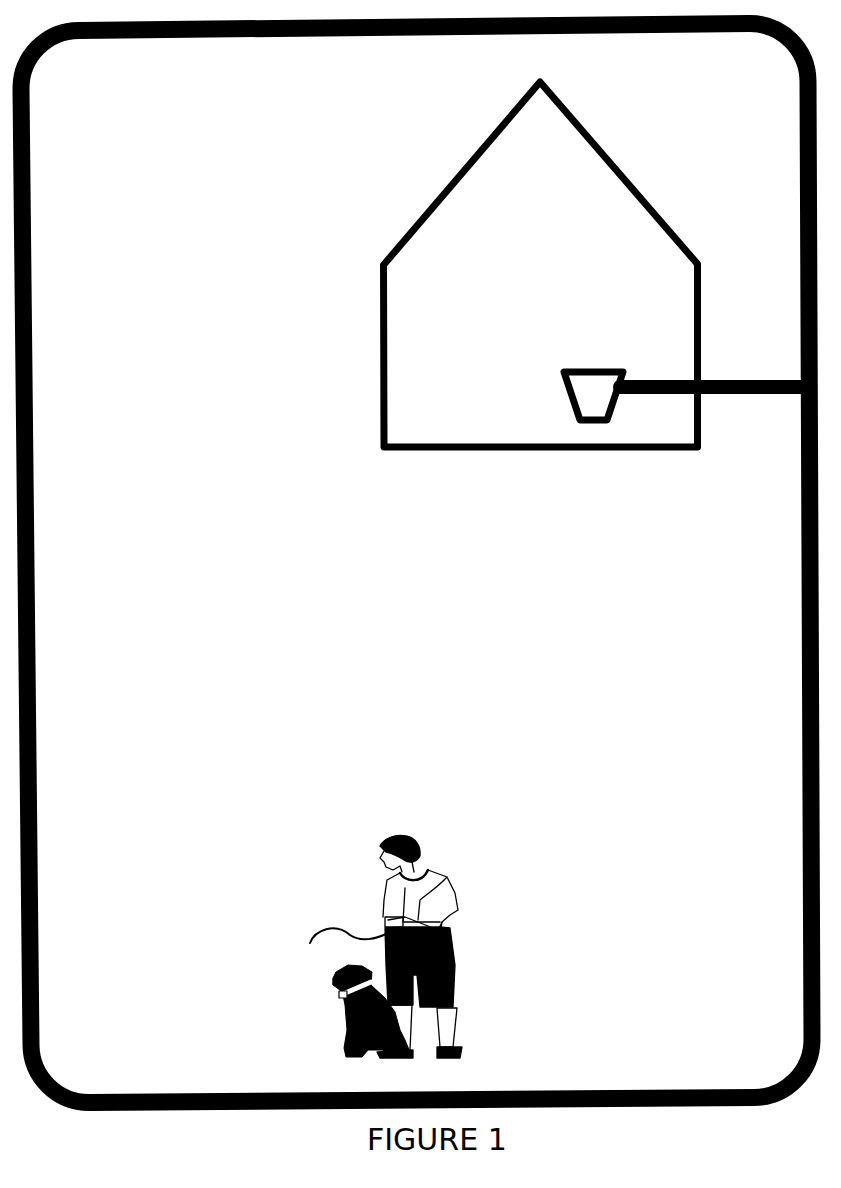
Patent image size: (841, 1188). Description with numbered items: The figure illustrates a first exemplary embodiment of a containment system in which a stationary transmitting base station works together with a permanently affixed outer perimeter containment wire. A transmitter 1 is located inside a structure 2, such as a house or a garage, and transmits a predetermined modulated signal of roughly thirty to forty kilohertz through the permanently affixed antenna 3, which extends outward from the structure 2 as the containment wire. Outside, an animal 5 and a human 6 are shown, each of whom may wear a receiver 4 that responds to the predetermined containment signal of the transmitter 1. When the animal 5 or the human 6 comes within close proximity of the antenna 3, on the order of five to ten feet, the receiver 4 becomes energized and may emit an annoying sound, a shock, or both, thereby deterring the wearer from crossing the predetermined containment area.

The transmitter 1 is at (579, 369).
The structure 2 is at (432, 444).
The antenna 3 is at (717, 398).
The receiver 4 is at (340, 995).
The animal 5 is at (347, 1014).
The human 6 is at (455, 1027).